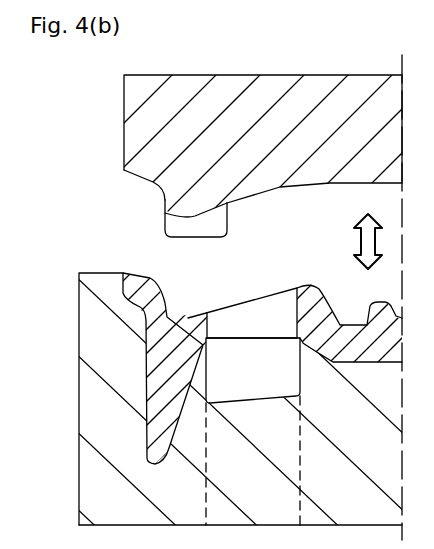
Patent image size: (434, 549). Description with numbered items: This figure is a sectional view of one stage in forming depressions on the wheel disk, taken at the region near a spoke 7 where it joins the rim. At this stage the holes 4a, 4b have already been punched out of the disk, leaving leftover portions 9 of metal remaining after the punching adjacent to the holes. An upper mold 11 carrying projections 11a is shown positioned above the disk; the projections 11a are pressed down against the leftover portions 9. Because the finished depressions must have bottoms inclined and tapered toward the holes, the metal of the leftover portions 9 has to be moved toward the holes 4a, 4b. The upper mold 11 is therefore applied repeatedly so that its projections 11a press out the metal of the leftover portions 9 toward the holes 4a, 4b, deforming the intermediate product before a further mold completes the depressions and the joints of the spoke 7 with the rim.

The upper mold 11 is at (137, 136).
The projection 11a is at (167, 231).
The leftover portion 9 is at (188, 318).
The hole 4a is at (253, 313).
The hole 4b is at (253, 370).
The spoke 7 is at (293, 268).